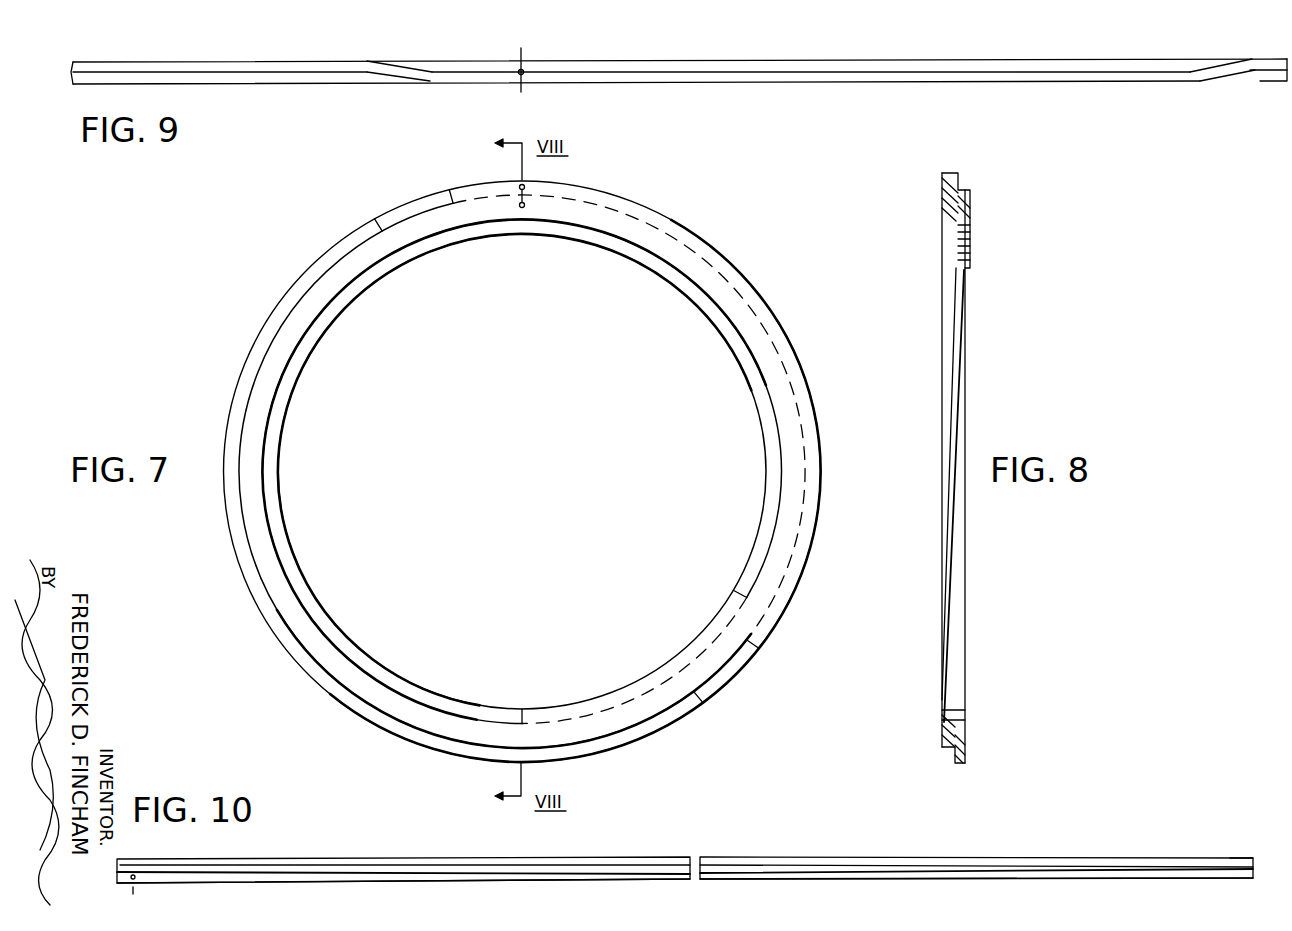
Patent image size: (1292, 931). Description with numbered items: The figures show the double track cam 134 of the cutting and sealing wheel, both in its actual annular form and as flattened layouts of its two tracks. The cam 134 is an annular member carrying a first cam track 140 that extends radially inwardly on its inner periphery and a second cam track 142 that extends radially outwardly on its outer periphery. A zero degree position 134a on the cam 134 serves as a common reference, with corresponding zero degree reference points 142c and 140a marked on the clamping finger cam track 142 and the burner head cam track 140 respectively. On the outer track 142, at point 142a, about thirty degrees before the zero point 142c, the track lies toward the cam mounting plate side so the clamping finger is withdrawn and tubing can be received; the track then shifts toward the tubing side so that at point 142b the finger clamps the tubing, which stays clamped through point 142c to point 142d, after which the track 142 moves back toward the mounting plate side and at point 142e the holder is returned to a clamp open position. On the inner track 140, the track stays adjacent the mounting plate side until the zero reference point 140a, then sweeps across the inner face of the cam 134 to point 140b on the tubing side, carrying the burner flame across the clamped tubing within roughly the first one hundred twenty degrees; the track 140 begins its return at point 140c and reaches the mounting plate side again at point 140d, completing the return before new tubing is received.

In FIG. 9, the double track cam 134 is at (804, 63).
In FIG. 7, the double track cam 134 is at (700, 332).
In FIG. 8, the double track cam 134 is at (940, 325).
In FIG. 10, the double track cam 134 is at (723, 857).
In FIG. 7, the zero degree position 134a is at (514, 177).
In FIG. 7, the first cam track 140 is at (758, 416).
In FIG. 8, the first cam track 140 is at (968, 385).
In FIG. 10, the first cam track 140 is at (412, 857).
In FIG. 10, the zero degree reference point of cam track 140 140a is at (133, 860).
In FIG. 10, the point 140b of cam track 140 140b is at (633, 881).
In FIG. 10, the point 140c of cam track 140 140c is at (746, 882).
In FIG. 10, the point 140d of cam track 140 140d is at (1231, 857).
In FIG. 9, the second cam track 142 is at (614, 73).
In FIG. 8, the second cam track 142 is at (940, 176).
In FIG. 9, the point 142a of cam track 142 142a is at (367, 62).
In FIG. 9, the point 142b of cam track 142 142b is at (430, 82).
In FIG. 9, the zero degree reference point of cam track 142 142c is at (521, 92).
In FIG. 9, the point 142d of cam track 142 142d is at (1200, 83).
In FIG. 9, the point 142e of cam track 142 142e is at (1257, 59).